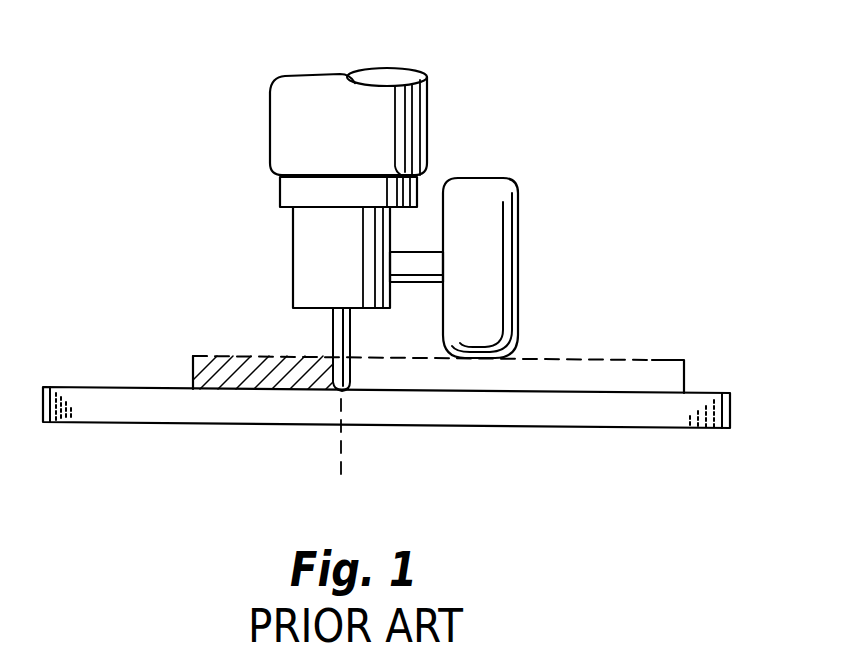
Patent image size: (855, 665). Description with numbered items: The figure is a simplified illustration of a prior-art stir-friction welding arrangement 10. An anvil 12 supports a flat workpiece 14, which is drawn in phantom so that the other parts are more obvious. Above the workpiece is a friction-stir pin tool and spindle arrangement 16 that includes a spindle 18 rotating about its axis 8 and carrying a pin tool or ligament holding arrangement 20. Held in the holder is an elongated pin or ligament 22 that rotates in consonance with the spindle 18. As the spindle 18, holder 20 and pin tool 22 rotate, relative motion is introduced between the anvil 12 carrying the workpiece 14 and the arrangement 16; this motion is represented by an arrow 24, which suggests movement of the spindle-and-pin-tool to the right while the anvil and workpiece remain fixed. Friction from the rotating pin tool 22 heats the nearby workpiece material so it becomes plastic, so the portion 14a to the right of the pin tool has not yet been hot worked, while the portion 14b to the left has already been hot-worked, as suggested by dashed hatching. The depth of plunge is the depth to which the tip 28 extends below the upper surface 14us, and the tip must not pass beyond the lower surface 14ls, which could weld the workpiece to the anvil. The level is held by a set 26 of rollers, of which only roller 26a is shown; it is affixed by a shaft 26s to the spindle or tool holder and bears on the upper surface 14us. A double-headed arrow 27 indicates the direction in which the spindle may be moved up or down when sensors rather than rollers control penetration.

The axis of rotation 8 is at (342, 462).
The stir-friction welding arrangement 10 is at (288, 523).
The anvil 12 is at (90, 388).
The workpiece 14 is at (634, 354).
The portion of workpiece 14a is at (598, 394).
The portion of workpiece 14b is at (240, 390).
The upper surface 14us is at (684, 359).
The lower surface 14ls is at (674, 394).
The friction-stir pin tool and spindle arrangement 16 is at (238, 85).
The spindle 18 is at (427, 110).
The pin tool or ligament holding arrangement 20 is at (277, 213).
The pin or ligament 22 is at (333, 340).
The arrow 24 is at (645, 202).
The set of rollers 26 is at (510, 254).
The roller 26a is at (518, 268).
The shaft 26s is at (418, 283).
The double-headed arrow 27 is at (325, 18).
The tip 28 is at (350, 385).